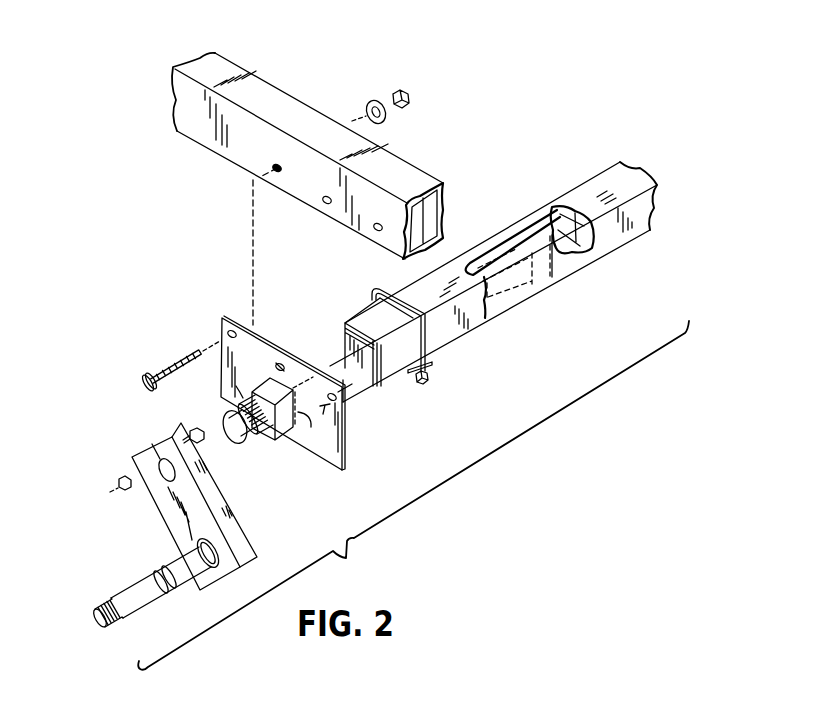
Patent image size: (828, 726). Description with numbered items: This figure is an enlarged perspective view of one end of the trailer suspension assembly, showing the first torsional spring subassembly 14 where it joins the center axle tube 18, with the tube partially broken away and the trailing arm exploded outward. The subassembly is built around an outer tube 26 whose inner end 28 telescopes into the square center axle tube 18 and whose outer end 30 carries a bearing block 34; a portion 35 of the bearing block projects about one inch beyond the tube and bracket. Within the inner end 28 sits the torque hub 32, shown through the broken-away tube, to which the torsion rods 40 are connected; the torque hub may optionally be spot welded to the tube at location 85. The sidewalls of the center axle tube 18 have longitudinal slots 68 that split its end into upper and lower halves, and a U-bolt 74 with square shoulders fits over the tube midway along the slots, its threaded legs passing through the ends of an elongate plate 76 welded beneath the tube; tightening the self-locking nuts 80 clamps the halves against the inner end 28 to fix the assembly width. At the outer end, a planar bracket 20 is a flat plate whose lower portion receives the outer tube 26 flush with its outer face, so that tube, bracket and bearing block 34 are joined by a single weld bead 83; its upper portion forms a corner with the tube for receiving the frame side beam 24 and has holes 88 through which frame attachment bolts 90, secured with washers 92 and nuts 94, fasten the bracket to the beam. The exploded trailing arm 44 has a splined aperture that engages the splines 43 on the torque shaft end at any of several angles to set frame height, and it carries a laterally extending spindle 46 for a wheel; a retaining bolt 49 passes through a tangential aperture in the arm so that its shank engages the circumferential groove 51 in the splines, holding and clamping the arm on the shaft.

The first torsional spring subassembly 14 is at (372, 400).
The center axle tube 18 is at (580, 182).
The planar bracket 20 is at (346, 440).
The frame side beam 24 is at (272, 87).
The outer tube 26 is at (493, 308).
The inner end 28 is at (548, 210).
The outer end 30 is at (342, 468).
The torque hub 32 is at (548, 278).
The bearing block 34 is at (243, 382).
The portion 35 is at (292, 438).
The torsion rods 40 is at (482, 293).
The splines 43 is at (270, 432).
The trailing arm 44 is at (244, 562).
The spindle 46 is at (150, 587).
The retaining bolt 49 is at (193, 424).
The circumferential groove 51 is at (272, 438).
The slots 68 is at (392, 360).
The U-bolts 74 is at (372, 297).
The elongate plates 76 is at (431, 368).
The self-locking nuts 80 is at (428, 379).
The weld bead 83 is at (298, 418).
The spot weld location 85 is at (560, 272).
The holes 88 is at (278, 362).
The frame attachment bolts 90 is at (187, 353).
The washers 92 is at (370, 103).
The nuts 94 is at (410, 97).